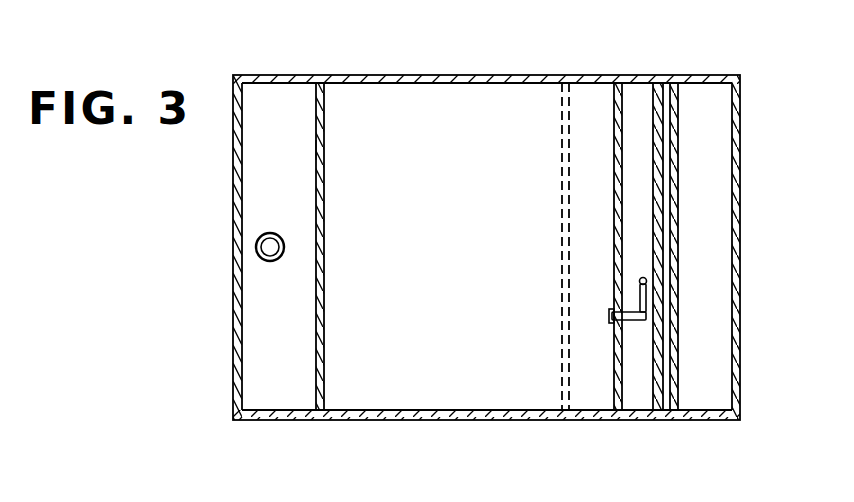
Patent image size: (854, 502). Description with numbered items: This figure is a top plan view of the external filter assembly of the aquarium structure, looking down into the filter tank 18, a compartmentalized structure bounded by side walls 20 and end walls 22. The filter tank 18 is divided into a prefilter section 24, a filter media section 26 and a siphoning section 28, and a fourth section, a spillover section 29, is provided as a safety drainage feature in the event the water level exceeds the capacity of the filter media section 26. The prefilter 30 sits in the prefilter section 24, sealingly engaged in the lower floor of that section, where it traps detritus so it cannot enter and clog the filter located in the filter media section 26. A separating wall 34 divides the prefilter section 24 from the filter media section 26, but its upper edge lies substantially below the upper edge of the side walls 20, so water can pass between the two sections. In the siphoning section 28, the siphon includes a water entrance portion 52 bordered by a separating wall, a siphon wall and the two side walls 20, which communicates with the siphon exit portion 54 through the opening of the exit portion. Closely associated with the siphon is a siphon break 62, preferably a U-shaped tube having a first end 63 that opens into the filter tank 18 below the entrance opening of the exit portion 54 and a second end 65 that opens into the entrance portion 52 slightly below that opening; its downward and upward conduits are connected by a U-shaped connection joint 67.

The filter tank 18 is at (335, 92).
The side walls 20 is at (477, 78).
The end walls 22 is at (234, 356).
The prefilter section 24 is at (258, 92).
The filter media section 26 is at (398, 100).
The siphoning section 28 is at (634, 94).
The spillover section 29 is at (708, 95).
The prefilter 30 is at (258, 240).
The separating wall 34 is at (316, 150).
The water entrance portion 52 is at (632, 122).
The siphon exit portion 54 is at (668, 94).
The siphon break 62 is at (640, 298).
The first end 63 is at (610, 316).
The second end 65 is at (642, 277).
The U-shaped connection joint 67 is at (646, 313).